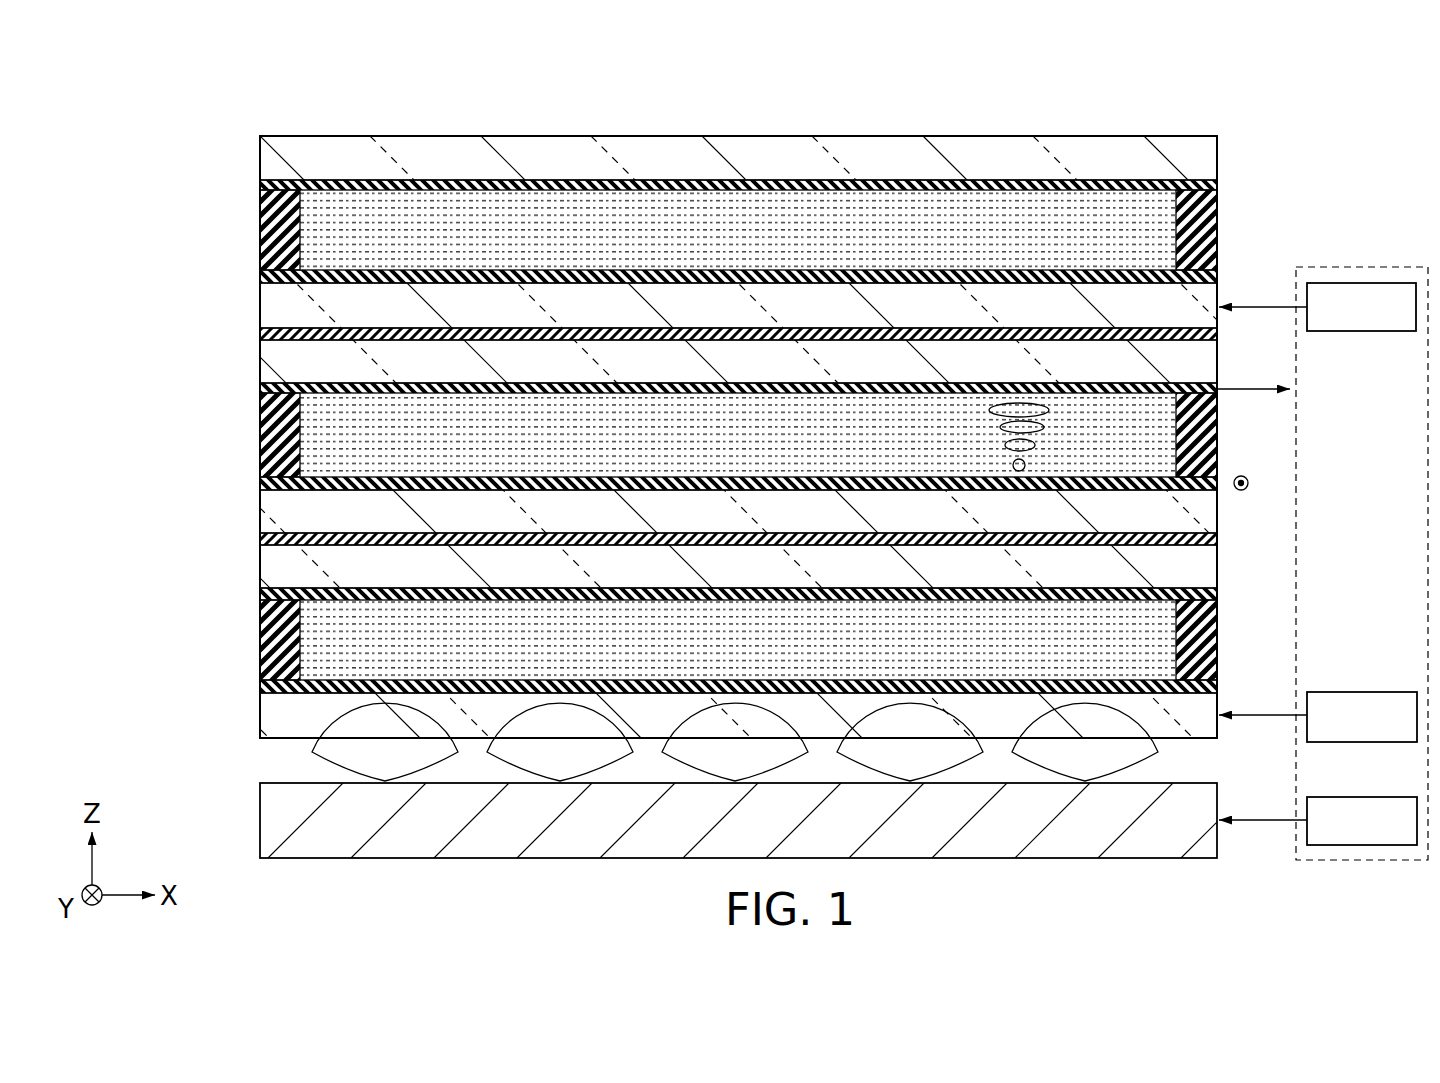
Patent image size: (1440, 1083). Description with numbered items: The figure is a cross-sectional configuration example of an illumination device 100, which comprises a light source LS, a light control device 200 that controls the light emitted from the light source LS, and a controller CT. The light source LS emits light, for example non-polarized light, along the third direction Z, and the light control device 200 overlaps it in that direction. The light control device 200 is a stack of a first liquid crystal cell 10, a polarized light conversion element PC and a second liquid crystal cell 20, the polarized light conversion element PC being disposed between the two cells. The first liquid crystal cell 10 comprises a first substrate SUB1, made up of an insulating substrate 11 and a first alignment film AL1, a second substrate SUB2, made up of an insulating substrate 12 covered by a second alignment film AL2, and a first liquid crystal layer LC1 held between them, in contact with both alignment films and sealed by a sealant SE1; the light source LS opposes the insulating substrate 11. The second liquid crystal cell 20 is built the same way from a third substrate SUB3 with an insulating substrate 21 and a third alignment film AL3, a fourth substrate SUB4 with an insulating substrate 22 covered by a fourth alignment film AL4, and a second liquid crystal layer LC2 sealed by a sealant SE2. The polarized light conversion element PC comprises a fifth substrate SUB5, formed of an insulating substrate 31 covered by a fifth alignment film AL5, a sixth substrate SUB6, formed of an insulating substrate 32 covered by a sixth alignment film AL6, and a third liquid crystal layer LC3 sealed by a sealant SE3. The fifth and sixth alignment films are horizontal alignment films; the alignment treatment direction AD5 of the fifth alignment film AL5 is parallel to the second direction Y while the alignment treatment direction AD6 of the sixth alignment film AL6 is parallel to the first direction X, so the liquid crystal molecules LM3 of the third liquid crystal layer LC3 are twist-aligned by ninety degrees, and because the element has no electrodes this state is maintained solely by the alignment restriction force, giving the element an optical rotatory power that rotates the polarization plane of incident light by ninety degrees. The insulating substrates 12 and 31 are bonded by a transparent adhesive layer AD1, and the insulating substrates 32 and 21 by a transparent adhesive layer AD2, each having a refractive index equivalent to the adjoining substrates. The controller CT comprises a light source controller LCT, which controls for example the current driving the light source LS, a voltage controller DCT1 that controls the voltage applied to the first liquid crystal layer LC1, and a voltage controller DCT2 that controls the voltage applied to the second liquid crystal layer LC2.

The illumination device 100 is at (720, 442).
The light control device 200 is at (720, 439).
The second liquid crystal cell 20 is at (713, 211).
The first liquid crystal cell 10 is at (713, 664).
The polarized light conversion element PC is at (710, 465).
The insulating substrate 22 is at (745, 137).
The insulating substrate 21 is at (745, 285).
The insulating substrate 32 is at (745, 357).
The insulating substrate 31 is at (745, 544).
The insulating substrate 12 is at (745, 603).
The insulating substrate 11 is at (745, 738).
The sealant SE1 is at (262, 622).
The sealant SE2 is at (262, 207).
The sealant SE3 is at (262, 414).
The first liquid crystal layer LC1 is at (305, 655).
The second liquid crystal layer LC2 is at (305, 236).
The third liquid crystal layer LC3 is at (305, 446).
The first alignment film AL1 is at (480, 694).
The second alignment film AL2 is at (480, 590).
The third alignment film AL3 is at (480, 283).
The fourth alignment film AL4 is at (484, 184).
The fifth alignment film AL5 is at (480, 490).
The sixth alignment film AL6 is at (480, 386).
The adhesive layer AD1 is at (262, 539).
The adhesive layer AD2 is at (262, 333).
The alignment treatment direction AD5 is at (1270, 489).
The alignment treatment direction AD6 is at (1247, 390).
The liquid crystal molecules LM3 is at (995, 437).
The light source LS is at (262, 822).
The first substrate SUB1 is at (1219, 732).
The second substrate SUB2 is at (1219, 576).
The third substrate SUB3 is at (1219, 289).
The fourth substrate SUB4 is at (1219, 139).
The fifth substrate SUB5 is at (1220, 524).
The sixth substrate SUB6 is at (1219, 367).
The controller CT is at (1357, 266).
The voltage controller DCT1 is at (1318, 717).
The voltage controller DCT2 is at (1317, 307).
The light source controller LCT is at (1318, 821).